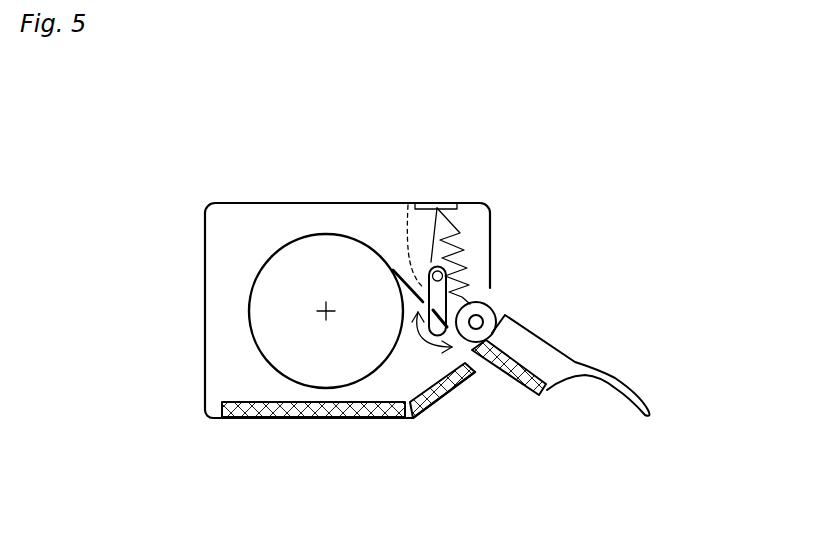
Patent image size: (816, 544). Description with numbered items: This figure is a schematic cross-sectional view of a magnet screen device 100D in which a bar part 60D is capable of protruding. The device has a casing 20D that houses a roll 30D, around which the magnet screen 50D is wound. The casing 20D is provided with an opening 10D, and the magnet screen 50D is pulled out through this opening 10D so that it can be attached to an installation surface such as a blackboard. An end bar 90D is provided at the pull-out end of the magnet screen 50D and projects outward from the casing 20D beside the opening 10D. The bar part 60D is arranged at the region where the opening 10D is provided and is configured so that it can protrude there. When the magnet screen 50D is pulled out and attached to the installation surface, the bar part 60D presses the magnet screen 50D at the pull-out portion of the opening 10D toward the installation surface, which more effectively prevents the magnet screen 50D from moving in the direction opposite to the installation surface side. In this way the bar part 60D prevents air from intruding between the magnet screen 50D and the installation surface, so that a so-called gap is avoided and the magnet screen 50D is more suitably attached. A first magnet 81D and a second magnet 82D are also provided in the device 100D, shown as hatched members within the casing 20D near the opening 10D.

The magnet screen device 100D is at (537, 198).
The casing 20D is at (205, 266).
The roll 30D is at (280, 333).
The magnet screen 50D is at (408, 205).
The bar part 60D is at (496, 306).
The end bar 90D is at (603, 370).
The opening 10D is at (479, 370).
The first magnet 81D is at (445, 405).
The second magnet 82D is at (292, 420).